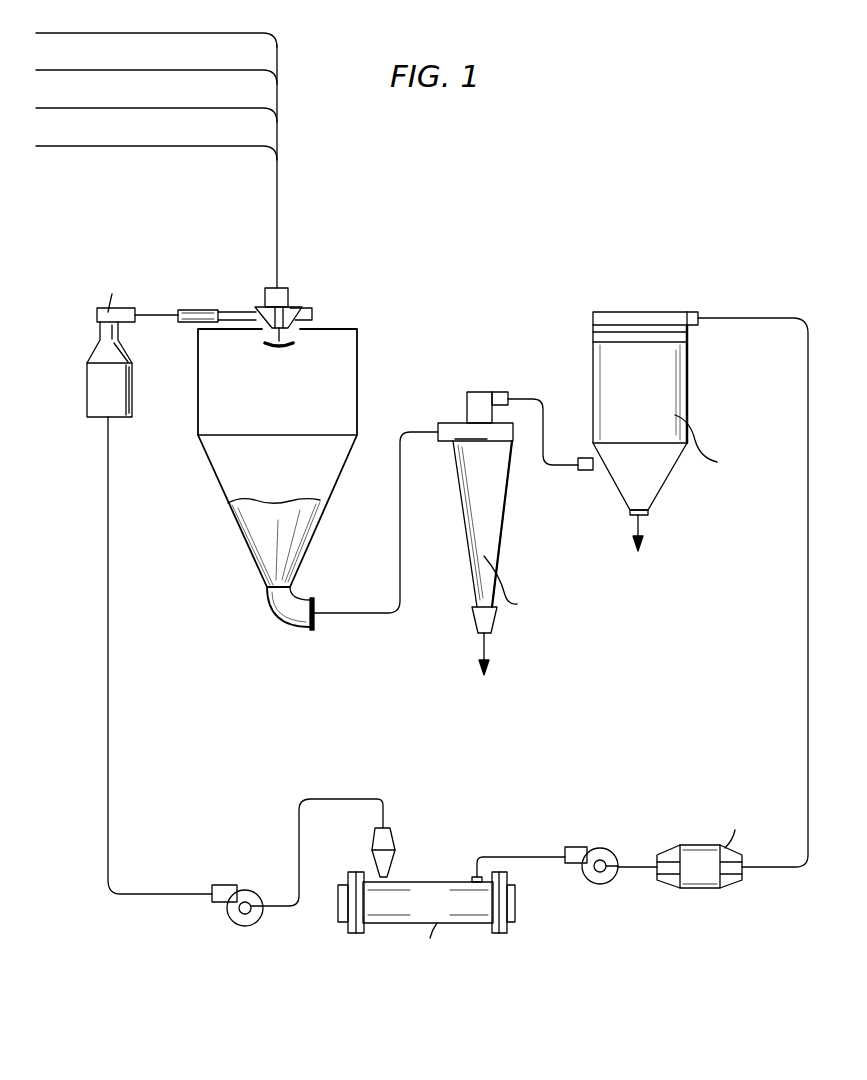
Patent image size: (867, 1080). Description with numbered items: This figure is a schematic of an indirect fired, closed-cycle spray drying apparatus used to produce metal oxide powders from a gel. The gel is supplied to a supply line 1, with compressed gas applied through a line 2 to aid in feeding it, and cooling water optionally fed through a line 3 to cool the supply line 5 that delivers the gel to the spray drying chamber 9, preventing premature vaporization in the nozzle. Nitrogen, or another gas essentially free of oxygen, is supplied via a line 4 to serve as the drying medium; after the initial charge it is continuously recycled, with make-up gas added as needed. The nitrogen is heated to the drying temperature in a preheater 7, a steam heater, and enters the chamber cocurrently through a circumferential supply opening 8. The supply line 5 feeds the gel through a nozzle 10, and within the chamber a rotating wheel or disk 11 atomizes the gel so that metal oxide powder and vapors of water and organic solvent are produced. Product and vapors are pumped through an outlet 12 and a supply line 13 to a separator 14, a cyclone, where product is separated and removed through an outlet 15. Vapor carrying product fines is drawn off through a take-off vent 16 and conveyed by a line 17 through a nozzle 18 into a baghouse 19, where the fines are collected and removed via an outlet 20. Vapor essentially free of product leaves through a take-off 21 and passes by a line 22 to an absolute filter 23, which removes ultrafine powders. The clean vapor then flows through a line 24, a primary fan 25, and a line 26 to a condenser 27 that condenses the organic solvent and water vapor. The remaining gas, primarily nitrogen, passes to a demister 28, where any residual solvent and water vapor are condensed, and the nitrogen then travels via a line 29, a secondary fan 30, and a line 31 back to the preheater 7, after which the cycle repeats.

The supply line 1 is at (264, 33).
The compressed gas line 2 is at (263, 70).
The cooling water line 3 is at (265, 108).
The nitrogen supply line 4 is at (267, 146).
The supply line 5 is at (277, 193).
The preheater 7 is at (116, 401).
The circumferential supply opening 8 is at (258, 312).
The spray drying chamber 9 is at (289, 486).
The nozzle 10 is at (298, 300).
The rotating wheel or disk 11 is at (290, 340).
The outlet 12 is at (290, 628).
The supply line 13 is at (400, 487).
The separator 14 is at (495, 481).
The outlet 15 is at (472, 620).
The take-off vent 16 is at (486, 392).
The line 17 is at (533, 395).
The nozzle 18 is at (582, 458).
The baghouse 19 is at (653, 404).
The outlet 20 is at (648, 515).
The take-off 21 is at (648, 318).
The line 22 is at (808, 612).
The absolute filter 23 is at (714, 877).
The line 24 is at (625, 862).
The primary fan 25 is at (598, 884).
The line 26 is at (477, 855).
The condenser 27 is at (442, 912).
The demister 28 is at (393, 850).
The line 29 is at (325, 799).
The secondary fan 30 is at (236, 925).
The line 31 is at (109, 705).